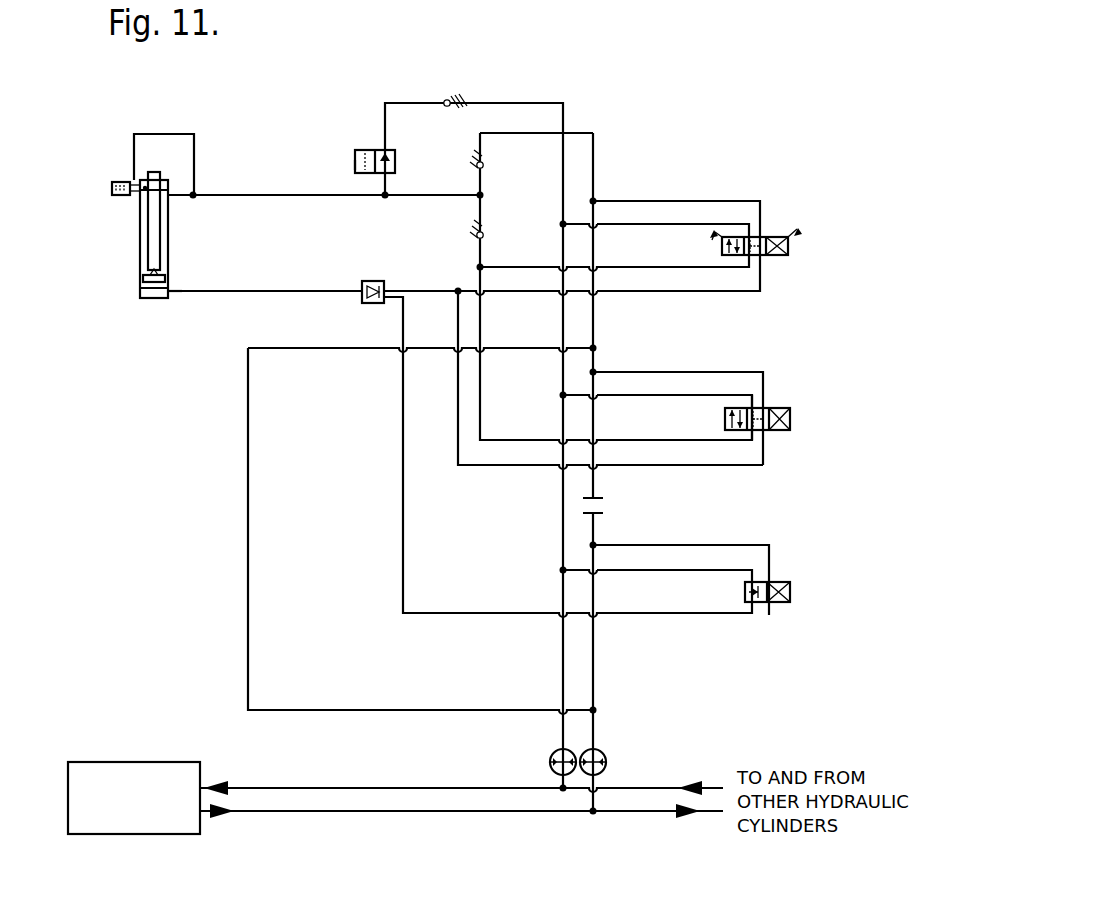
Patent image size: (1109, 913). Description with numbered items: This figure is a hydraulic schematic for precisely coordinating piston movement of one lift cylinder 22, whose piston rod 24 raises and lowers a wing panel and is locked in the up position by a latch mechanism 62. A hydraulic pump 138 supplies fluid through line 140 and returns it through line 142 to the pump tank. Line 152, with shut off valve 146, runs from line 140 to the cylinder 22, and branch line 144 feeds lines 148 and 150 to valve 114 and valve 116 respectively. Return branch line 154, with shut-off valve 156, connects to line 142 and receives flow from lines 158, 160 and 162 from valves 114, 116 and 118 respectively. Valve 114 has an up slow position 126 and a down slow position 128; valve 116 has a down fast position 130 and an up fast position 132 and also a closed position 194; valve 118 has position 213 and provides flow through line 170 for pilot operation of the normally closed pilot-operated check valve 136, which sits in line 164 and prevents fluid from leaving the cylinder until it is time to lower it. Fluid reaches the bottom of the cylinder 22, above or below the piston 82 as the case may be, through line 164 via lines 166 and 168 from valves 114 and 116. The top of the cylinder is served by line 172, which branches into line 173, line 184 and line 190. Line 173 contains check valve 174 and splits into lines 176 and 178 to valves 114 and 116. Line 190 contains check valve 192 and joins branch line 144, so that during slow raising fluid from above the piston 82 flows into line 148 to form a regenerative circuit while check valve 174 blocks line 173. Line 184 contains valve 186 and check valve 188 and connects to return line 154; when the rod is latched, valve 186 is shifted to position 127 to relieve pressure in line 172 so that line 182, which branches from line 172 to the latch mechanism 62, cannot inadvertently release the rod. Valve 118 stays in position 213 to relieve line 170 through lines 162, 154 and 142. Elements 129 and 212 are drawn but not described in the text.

The hydraulic cylinder 22 is at (168, 250).
The piston rod 24 is at (160, 225).
The latch mechanism 62 is at (110, 197).
The piston 82 is at (140, 291).
The valve 114 is at (765, 237).
The valve 116 is at (776, 408).
The valve 118 is at (769, 570).
The up slow position 126 is at (733, 237).
The position 127 is at (356, 176).
The down slow position 128 is at (784, 237).
The valve port 129 is at (395, 173).
The down fast position 130 is at (790, 408).
The up fast position 132 is at (742, 408).
The pilot-operated check valve 136 is at (372, 281).
The hydraulic pump 138 is at (136, 762).
The line 140 is at (352, 811).
The line 142 is at (352, 788).
The branch line 144 is at (248, 534).
The shut off valve 146 is at (606, 755).
The line 148 is at (682, 201).
The line 150 is at (686, 372).
The line 152 is at (597, 726).
The return branch line 154 is at (563, 666).
The shut-off valve 156 is at (550, 758).
The line 158 is at (600, 220).
The line 160 is at (603, 395).
The line 162 is at (650, 570).
The line 164 is at (292, 291).
The line 166 is at (766, 291).
The line 168 is at (762, 467).
The line 170 is at (403, 534).
The line 172 is at (385, 195).
The line 173 is at (480, 267).
The check valve 174 is at (478, 235).
The line 176 is at (486, 266).
The line 178 is at (520, 440).
The line 182 is at (193, 170).
The line 184 is at (508, 102).
The valve 186 is at (375, 150).
The check valve 188 is at (447, 103).
The line 190 is at (568, 133).
The check valve 192 is at (478, 168).
The closed position 194 is at (764, 440).
The unlock check valve 212 is at (792, 582).
The position 213 is at (745, 592).